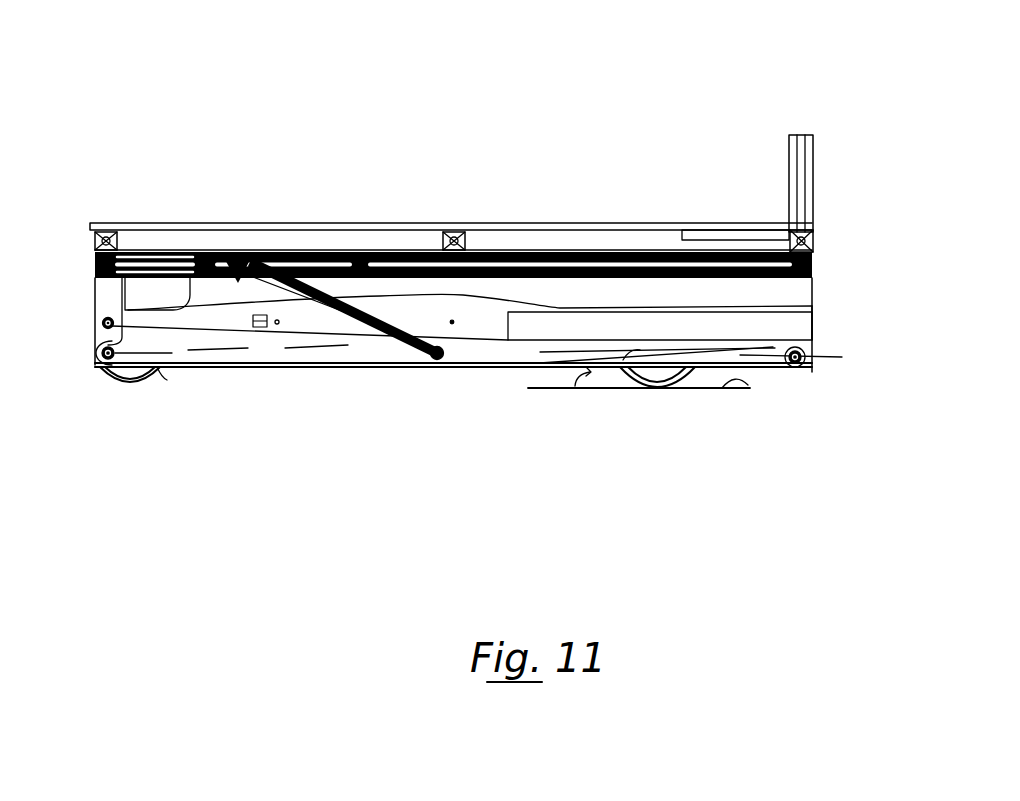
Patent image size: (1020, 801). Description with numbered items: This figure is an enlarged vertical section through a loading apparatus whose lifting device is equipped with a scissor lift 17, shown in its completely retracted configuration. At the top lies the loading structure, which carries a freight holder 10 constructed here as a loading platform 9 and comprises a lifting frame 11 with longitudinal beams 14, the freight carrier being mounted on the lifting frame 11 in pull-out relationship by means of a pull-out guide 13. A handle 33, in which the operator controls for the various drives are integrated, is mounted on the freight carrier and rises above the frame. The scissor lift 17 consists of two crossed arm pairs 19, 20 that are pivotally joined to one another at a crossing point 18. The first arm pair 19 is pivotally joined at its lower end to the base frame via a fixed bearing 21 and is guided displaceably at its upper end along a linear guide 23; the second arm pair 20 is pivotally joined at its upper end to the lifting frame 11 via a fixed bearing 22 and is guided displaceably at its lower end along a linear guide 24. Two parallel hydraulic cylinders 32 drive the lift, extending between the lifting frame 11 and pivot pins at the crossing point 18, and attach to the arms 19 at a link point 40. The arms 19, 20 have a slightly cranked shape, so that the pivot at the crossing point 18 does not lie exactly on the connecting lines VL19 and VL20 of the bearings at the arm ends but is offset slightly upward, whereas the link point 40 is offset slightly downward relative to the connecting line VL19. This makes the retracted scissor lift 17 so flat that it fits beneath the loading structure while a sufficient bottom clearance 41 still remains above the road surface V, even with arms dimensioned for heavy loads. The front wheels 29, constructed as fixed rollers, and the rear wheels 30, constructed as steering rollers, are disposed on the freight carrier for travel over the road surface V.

The loading platform 9 is at (307, 224).
The freight holder 10 is at (258, 224).
The lifting frame 11 is at (62, 240).
The pull-out guide 13 is at (550, 290).
The longitudinal beam 14 is at (622, 253).
The scissor lift 17 is at (493, 293).
The crossing point 18 is at (452, 324).
The first arm pair 19 is at (322, 353).
The second arm pair 20 is at (221, 318).
The fixed bearing 21 is at (103, 372).
The fixed bearing 22 is at (104, 324).
The linear guide 23 is at (814, 332).
The linear guide 24 is at (806, 350).
The front wheel 29 is at (160, 368).
The rear wheel 30 is at (673, 390).
The hydraulic cylinder 32 is at (378, 322).
The handle 33 is at (792, 135).
The link point 40 is at (437, 360).
The bottom clearance 41 is at (597, 388).
The road surface V is at (746, 388).
The connecting line of first arm bearings VL19 is at (246, 348).
The connecting line of second arm bearings VL20 is at (795, 357).